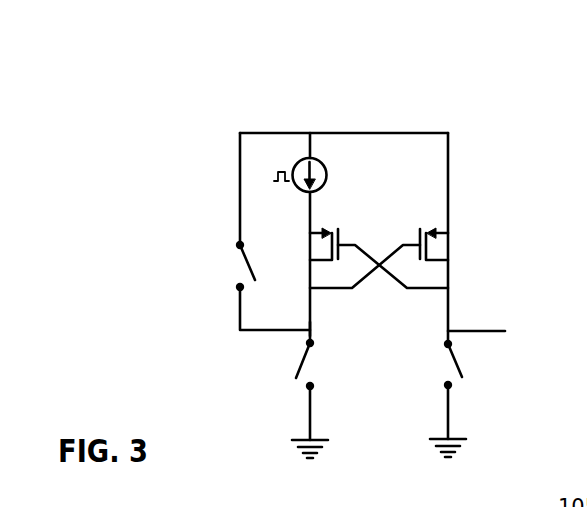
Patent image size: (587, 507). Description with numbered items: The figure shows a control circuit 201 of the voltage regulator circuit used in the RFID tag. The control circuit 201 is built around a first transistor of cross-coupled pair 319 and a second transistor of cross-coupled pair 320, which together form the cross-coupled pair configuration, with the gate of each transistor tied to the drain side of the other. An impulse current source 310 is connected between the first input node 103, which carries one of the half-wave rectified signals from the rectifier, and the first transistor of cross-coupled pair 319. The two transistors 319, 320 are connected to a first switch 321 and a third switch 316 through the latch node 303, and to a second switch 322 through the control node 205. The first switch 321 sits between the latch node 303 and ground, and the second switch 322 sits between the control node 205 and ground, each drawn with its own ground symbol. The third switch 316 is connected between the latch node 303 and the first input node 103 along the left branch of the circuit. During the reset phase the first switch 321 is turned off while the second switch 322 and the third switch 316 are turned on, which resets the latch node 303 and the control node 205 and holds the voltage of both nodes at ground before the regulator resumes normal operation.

The control circuit 201 is at (282, 104).
The first input node 103 is at (338, 132).
The impulse current source 310 is at (328, 172).
The first transistor of cross-coupled pair 319 is at (332, 230).
The second transistor of cross-coupled pair 320 is at (433, 230).
The third switch 316 is at (238, 258).
The latch node 303 is at (315, 322).
The control node 205 is at (477, 328).
The first switch 321 is at (297, 370).
The second switch 322 is at (462, 373).